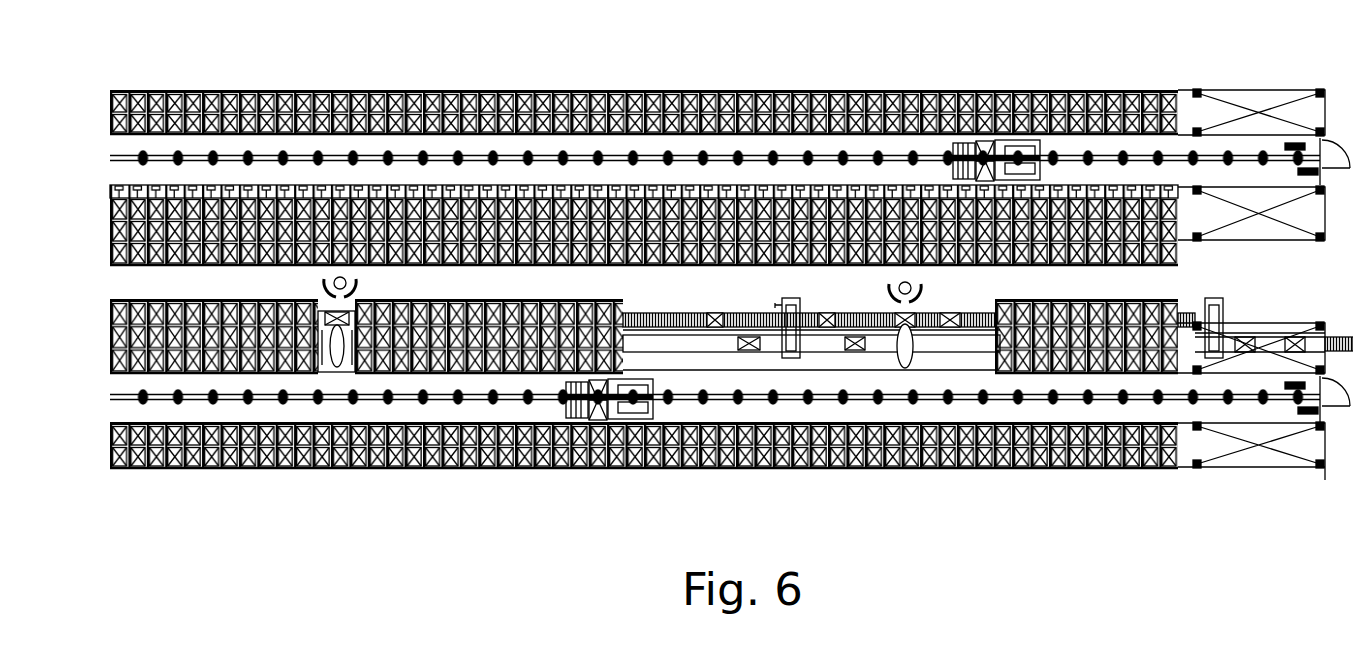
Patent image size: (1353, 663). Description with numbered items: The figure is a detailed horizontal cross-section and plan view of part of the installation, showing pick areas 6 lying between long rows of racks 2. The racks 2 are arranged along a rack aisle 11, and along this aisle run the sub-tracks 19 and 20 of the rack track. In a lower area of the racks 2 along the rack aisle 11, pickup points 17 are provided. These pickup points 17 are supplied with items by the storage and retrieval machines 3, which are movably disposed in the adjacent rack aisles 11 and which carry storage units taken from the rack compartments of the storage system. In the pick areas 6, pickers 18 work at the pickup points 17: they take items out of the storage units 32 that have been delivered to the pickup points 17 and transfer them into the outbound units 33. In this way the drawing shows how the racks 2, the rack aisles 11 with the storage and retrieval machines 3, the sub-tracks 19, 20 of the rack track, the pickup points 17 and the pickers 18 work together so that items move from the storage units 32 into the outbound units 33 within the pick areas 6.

The rack 2 is at (1045, 92).
The storage and retrieval machine 3 is at (985, 140).
The pick area 6 is at (395, 283).
The rack aisle 11 is at (245, 155).
The pickup point 17 is at (1032, 366).
The picker 18 is at (905, 280).
The sub-track 19 is at (660, 312).
The sub-track 20 is at (707, 343).
The storage unit 32 is at (895, 410).
The outbound unit 33 is at (712, 312).